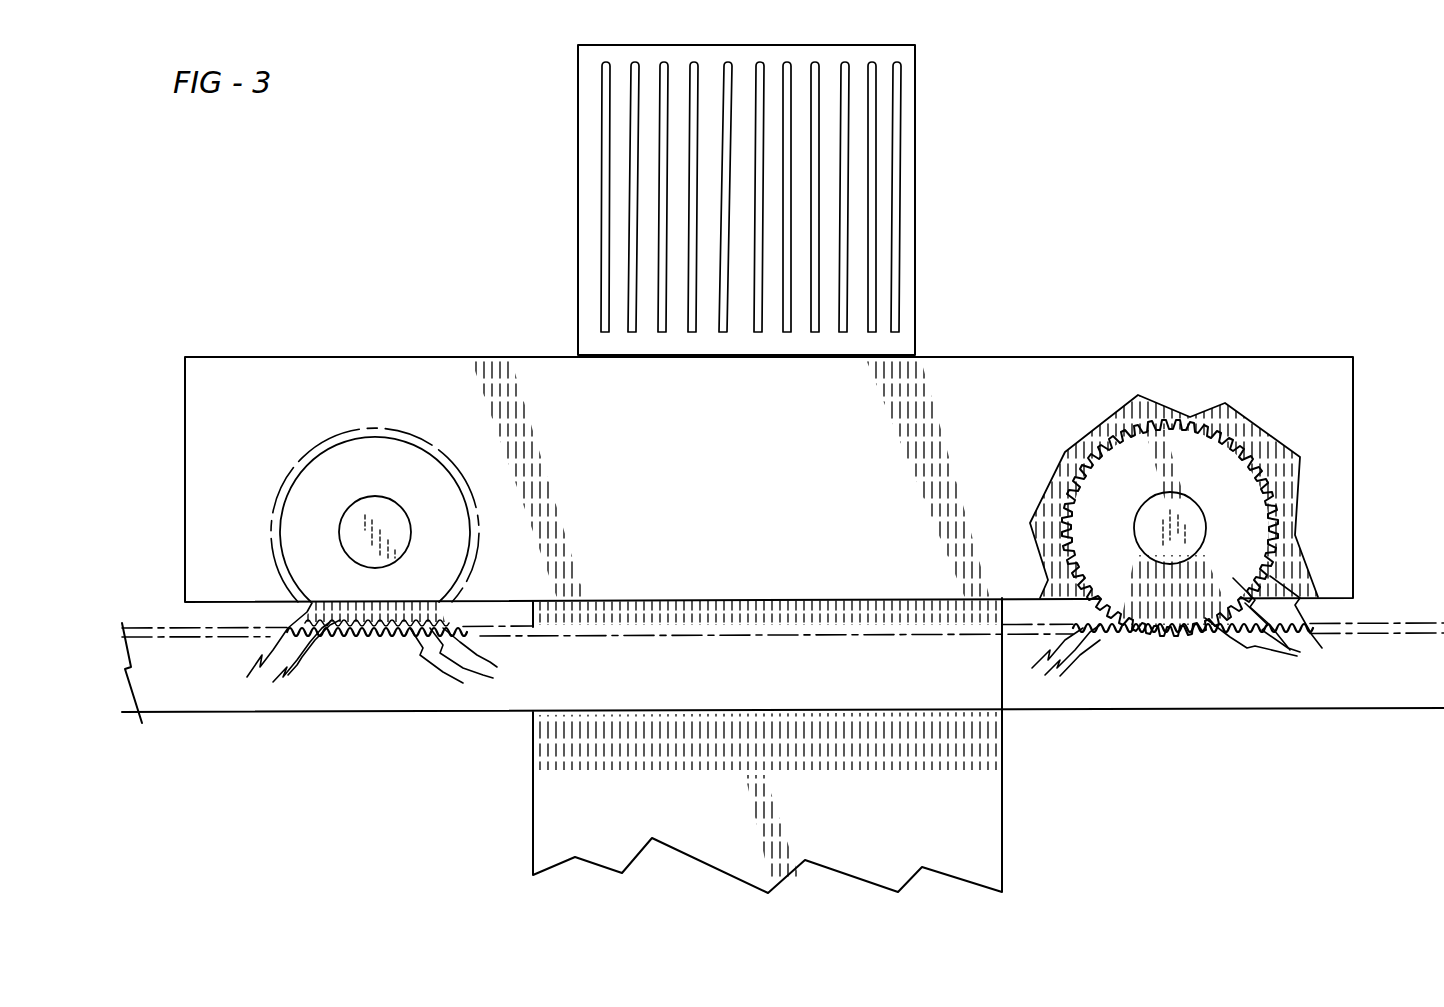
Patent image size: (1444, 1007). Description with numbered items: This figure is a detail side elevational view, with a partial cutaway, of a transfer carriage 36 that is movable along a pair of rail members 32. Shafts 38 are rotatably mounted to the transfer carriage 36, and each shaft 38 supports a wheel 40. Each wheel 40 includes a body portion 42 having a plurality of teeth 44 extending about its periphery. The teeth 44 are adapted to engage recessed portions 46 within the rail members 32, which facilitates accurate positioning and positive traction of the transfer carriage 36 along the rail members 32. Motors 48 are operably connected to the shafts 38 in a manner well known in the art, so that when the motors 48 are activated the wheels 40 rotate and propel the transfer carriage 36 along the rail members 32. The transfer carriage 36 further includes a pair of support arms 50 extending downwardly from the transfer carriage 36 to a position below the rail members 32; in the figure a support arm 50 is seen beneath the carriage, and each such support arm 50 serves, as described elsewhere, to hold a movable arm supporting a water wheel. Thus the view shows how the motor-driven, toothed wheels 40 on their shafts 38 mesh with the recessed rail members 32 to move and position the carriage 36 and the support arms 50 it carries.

The rail member 32 is at (1363, 688).
The transfer carriage 36 is at (1046, 245).
The shaft 38 is at (393, 508).
The wheel 40 is at (478, 550).
The body portion 42 is at (375, 612).
The teeth 44 is at (779, 645).
The recessed portions 46 is at (755, 663).
The motor 48 is at (883, 162).
The support arm 50 is at (985, 817).